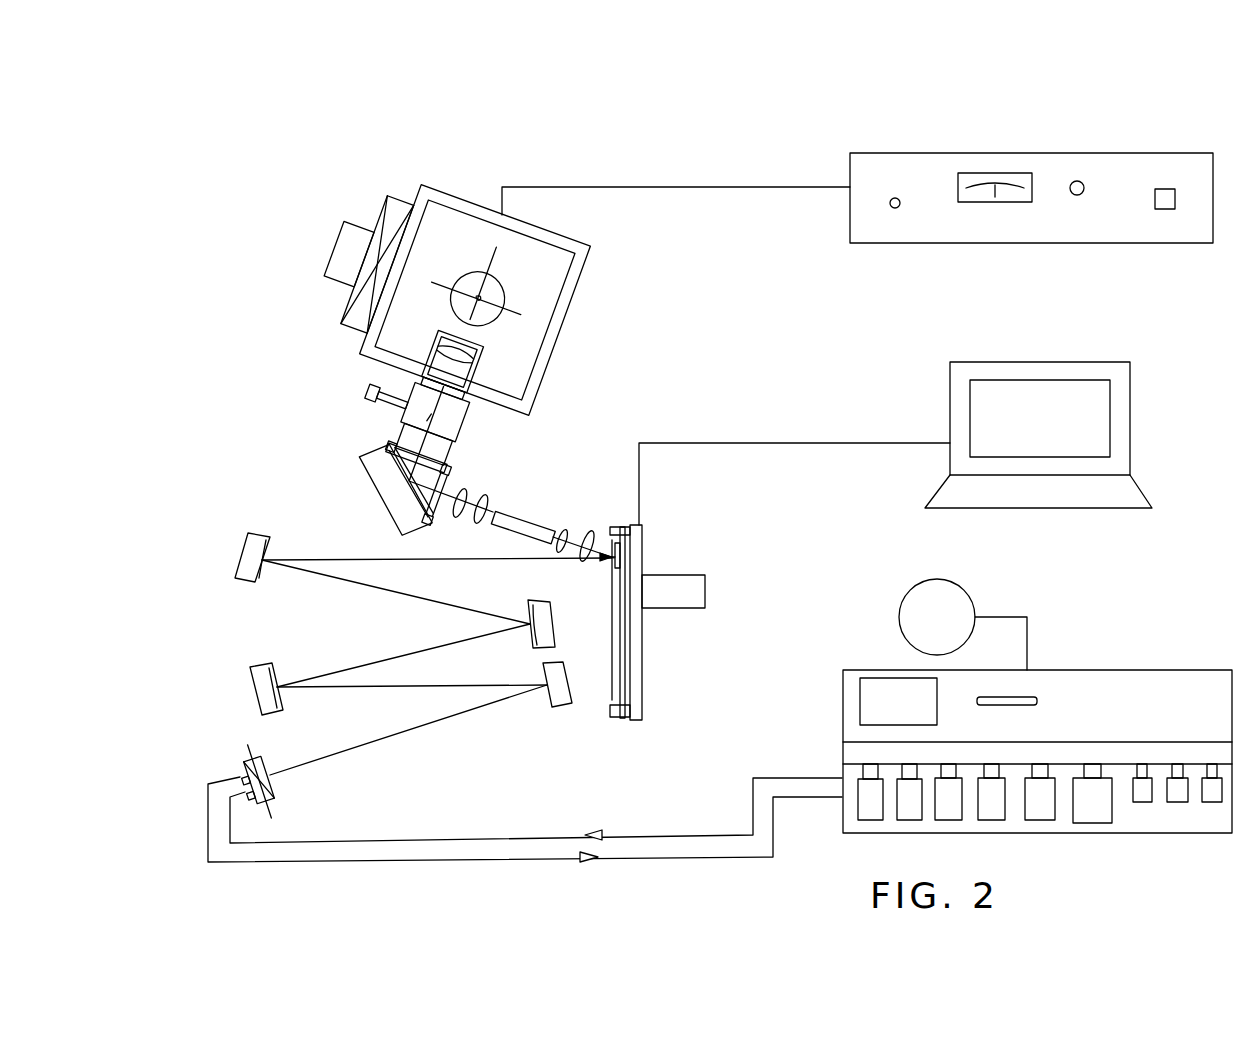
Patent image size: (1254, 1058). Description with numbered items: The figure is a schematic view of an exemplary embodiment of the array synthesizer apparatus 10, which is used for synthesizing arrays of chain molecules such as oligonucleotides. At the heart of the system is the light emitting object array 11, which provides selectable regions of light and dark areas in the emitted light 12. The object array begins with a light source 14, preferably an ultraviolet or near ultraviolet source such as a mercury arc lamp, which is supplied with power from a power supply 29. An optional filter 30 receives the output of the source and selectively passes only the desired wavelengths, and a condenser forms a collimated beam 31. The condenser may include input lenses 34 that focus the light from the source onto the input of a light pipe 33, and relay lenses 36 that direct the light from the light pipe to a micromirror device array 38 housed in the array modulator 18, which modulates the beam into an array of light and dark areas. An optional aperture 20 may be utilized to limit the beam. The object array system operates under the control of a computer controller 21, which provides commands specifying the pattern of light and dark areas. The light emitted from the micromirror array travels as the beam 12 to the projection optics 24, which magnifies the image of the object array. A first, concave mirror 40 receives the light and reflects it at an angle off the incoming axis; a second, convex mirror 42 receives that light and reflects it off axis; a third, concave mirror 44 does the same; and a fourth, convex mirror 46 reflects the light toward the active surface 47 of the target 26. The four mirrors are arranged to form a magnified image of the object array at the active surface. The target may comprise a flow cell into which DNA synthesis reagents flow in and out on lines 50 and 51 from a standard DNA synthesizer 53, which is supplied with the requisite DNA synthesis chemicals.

The apparatus 10 is at (306, 178).
The light emitting object array 11 is at (589, 166).
The emitted light 12 is at (464, 561).
The light source 14 is at (578, 287).
The array modulator 18 is at (643, 662).
The aperture 20 is at (582, 526).
The computer controller 21 is at (1046, 362).
The projection optics 24 is at (206, 505).
The target 26 is at (248, 770).
The power supply 29 is at (1078, 153).
The filter 30 is at (354, 472).
The collimated beam 31 is at (567, 543).
The light pipe 33 is at (522, 515).
The input lenses 34 is at (464, 494).
The relay lenses 36 is at (563, 528).
The micromirror device array 38 is at (611, 563).
The first concave mirror 40 is at (254, 561).
The second convex mirror 42 is at (551, 617).
The third concave mirror 44 is at (262, 666).
The fourth convex mirror 46 is at (561, 709).
The active surface 47 is at (272, 779).
The line 50 is at (507, 837).
The line 51 is at (511, 860).
The DNA synthesizer 53 is at (1109, 670).